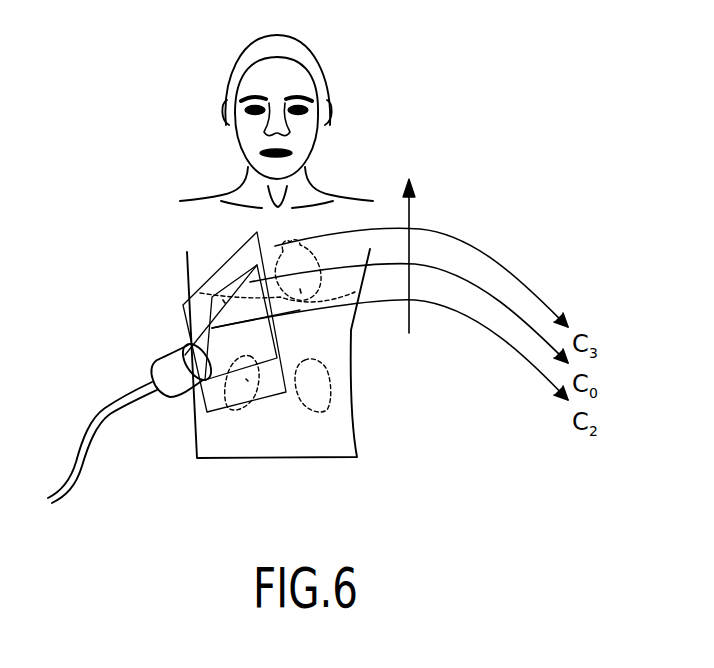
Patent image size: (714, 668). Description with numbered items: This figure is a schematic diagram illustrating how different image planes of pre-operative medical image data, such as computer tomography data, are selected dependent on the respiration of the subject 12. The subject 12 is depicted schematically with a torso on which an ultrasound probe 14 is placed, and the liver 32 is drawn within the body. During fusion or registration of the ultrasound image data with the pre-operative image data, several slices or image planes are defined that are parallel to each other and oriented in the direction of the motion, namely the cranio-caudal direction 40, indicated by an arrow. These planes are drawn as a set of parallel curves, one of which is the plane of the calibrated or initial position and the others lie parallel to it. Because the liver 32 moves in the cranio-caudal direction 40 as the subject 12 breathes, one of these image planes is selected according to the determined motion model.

The subject 12 is at (355, 199).
The ultrasound probe 14 is at (173, 397).
The liver 32 is at (194, 306).
The cranio-caudal direction 40 is at (413, 212).